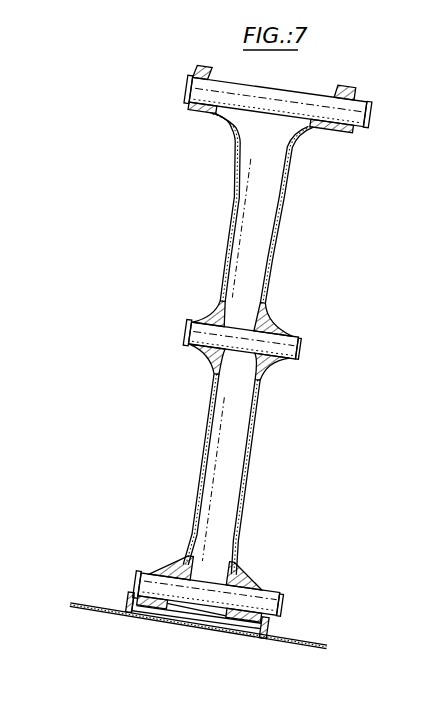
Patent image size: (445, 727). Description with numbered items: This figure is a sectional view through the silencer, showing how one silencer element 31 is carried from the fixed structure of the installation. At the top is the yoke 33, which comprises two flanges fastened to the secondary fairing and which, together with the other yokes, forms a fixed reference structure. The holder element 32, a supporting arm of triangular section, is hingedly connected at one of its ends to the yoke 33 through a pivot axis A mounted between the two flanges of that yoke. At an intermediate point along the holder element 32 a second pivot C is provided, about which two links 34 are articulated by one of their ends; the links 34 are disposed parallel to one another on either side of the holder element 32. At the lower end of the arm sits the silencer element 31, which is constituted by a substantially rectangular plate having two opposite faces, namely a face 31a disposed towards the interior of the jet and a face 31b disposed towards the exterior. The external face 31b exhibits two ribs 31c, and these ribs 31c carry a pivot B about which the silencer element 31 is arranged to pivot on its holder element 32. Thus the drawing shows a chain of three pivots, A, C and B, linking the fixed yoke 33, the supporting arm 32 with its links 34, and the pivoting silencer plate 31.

The pivot axis A is at (367, 115).
The pivot B is at (268, 607).
The pivot C is at (297, 348).
The silencer element 31 is at (180, 627).
The face 31a is at (258, 634).
The face 31b is at (303, 640).
The ribs 31c is at (142, 562).
The holder element 32 is at (277, 233).
The yoke 33 is at (193, 72).
The links 34 is at (197, 320).